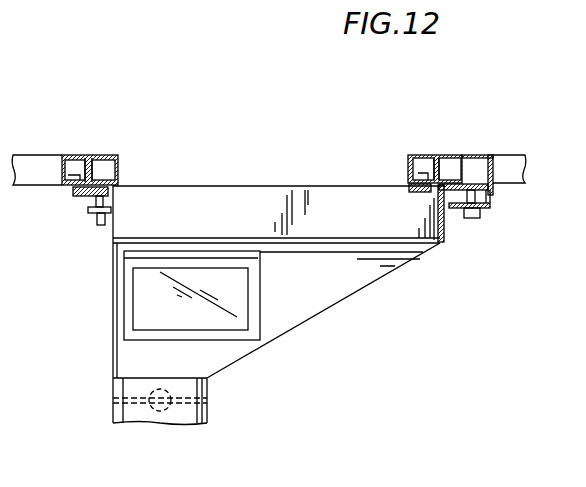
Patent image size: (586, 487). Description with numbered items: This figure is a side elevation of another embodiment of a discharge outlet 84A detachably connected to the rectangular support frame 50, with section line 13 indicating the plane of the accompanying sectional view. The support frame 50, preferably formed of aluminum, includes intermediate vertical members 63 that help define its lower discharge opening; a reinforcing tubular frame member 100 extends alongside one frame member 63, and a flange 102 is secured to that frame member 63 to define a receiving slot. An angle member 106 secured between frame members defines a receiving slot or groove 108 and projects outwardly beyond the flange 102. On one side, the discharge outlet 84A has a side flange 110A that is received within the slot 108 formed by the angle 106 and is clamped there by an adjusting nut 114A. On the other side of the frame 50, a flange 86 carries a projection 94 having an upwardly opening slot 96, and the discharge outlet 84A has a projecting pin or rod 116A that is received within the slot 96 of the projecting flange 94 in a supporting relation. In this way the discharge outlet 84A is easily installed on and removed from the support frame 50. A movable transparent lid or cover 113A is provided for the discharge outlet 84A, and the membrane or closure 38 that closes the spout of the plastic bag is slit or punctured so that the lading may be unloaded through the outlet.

The section line 13- 13 is at (50, 103).
The membrane or closure 38 is at (118, 155).
The rectangular support frame or gate 50 is at (93, 152).
The intermediate vertical members 63 is at (68, 157).
The discharge outlet 84A is at (117, 312).
The flange 86 is at (80, 195).
The projection 94 is at (101, 226).
The upwardly opening slot 96 is at (97, 212).
The reinforcing tubular frame member 100 is at (444, 158).
The flange 102 is at (445, 195).
The angle member 106 is at (497, 196).
The receiving slot or groove 108 is at (455, 210).
The side flange 110A is at (466, 185).
The movable transparent lid or cover 113A is at (154, 322).
The adjusting nut 114A is at (472, 218).
The projecting pin or rod 116A is at (90, 211).